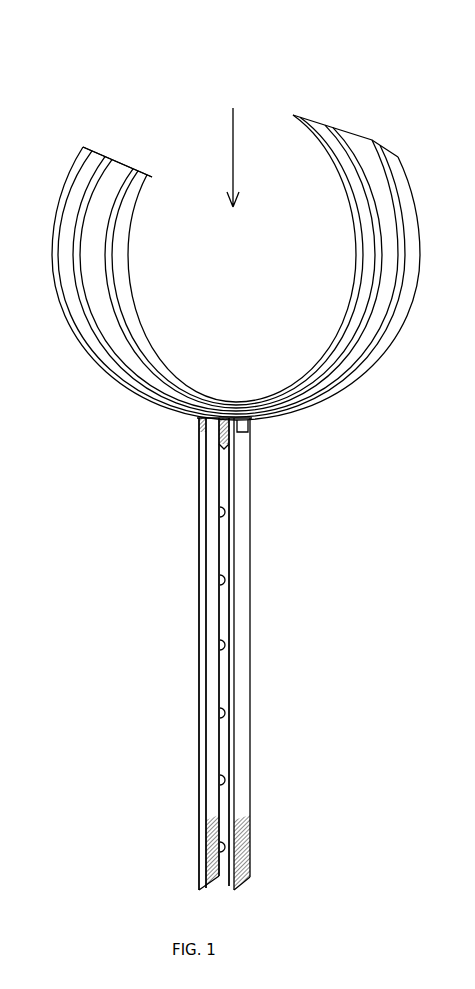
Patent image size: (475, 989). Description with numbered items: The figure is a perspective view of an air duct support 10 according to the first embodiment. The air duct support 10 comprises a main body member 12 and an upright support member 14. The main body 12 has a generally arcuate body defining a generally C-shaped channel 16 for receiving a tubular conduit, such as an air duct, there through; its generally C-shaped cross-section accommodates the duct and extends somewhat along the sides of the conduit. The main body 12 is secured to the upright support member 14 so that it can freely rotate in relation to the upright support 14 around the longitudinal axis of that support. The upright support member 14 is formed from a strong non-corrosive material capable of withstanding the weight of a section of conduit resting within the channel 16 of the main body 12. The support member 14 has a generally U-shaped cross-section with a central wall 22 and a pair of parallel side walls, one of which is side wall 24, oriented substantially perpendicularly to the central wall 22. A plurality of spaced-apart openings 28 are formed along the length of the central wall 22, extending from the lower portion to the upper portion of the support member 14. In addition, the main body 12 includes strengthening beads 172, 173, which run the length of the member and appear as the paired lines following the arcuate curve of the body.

The air duct support 10 is at (124, 155).
The main body member 12 is at (373, 163).
The upright support member 14 is at (251, 600).
The C-shaped channel 16 is at (235, 146).
The central wall 22 is at (222, 675).
The side wall 24 is at (200, 800).
The spaced-apart openings 28 is at (225, 580).
The strengthening bead 172 is at (107, 155).
The strengthening bead 173 is at (134, 165).